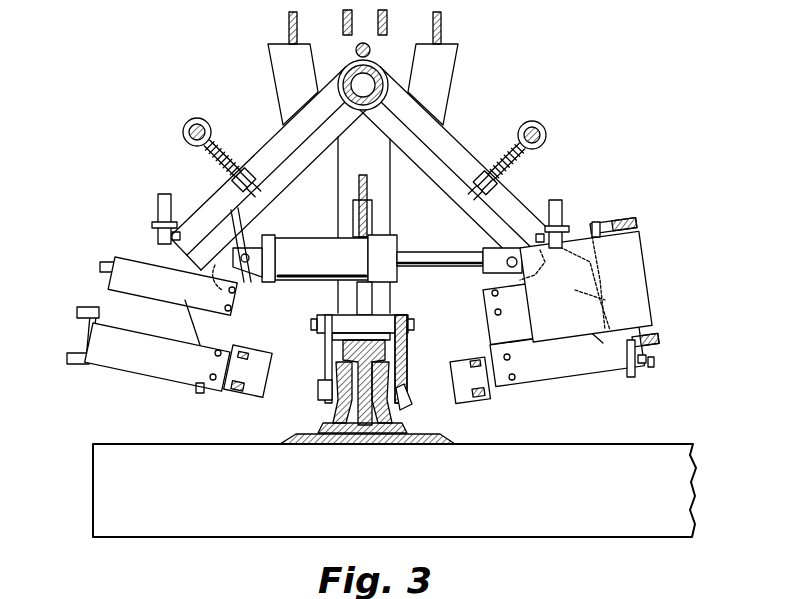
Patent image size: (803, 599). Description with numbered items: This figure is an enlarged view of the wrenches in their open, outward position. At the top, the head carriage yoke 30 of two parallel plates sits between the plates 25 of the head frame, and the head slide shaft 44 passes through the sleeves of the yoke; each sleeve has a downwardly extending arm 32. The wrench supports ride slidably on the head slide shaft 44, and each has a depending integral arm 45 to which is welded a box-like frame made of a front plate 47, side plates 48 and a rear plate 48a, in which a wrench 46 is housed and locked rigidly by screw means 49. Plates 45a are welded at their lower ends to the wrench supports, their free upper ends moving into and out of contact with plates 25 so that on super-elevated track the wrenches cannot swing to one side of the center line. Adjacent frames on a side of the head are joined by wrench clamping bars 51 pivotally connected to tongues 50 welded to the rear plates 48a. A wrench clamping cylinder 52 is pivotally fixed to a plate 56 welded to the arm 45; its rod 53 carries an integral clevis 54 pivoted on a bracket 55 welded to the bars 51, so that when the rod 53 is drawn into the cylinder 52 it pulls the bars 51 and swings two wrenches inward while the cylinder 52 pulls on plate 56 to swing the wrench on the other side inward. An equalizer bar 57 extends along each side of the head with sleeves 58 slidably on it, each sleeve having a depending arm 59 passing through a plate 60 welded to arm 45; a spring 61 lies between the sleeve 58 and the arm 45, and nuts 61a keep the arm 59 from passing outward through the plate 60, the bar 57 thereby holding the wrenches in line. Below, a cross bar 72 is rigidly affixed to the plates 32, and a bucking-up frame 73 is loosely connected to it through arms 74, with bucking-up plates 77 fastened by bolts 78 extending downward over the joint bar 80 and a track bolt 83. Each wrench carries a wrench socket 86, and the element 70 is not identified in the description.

The plates of the head frame 25 is at (289, 20).
The head carriage yoke 30 is at (343, 19).
The arms 32 is at (338, 186).
The head slide shaft 44 is at (349, 70).
The depending integral arm 45 is at (276, 128).
The plates 45a is at (268, 66).
The wrenches 46 is at (232, 328).
The front plate 47 is at (243, 283).
The side plates 48 is at (118, 308).
The rear plate 48a is at (100, 368).
The screw means 49 is at (100, 266).
The tongues 50 is at (618, 226).
The wrench clamping bars 51 is at (637, 230).
The wrench clamping cylinder 52 is at (292, 237).
The rod 53 is at (446, 253).
The clevis 54 is at (483, 272).
The bracket 55 is at (640, 300).
The plate 56 is at (257, 232).
The equalizer bar 57 is at (183, 132).
The sleeves 58 is at (547, 133).
The depending arm 59 is at (528, 160).
The plate 60 is at (500, 184).
The spring 61 is at (504, 158).
The nuts 61a is at (452, 184).
The pin 70 is at (371, 50).
The cross bar 72 is at (364, 176).
The bucking-up frame 73 is at (407, 360).
The arms 74 is at (357, 300).
The bucking-up plates 77 is at (408, 400).
The bolts 78 is at (313, 325).
The joint bar 80 is at (332, 412).
The track bolt 83 is at (318, 388).
The wrench socket 86 is at (252, 396).